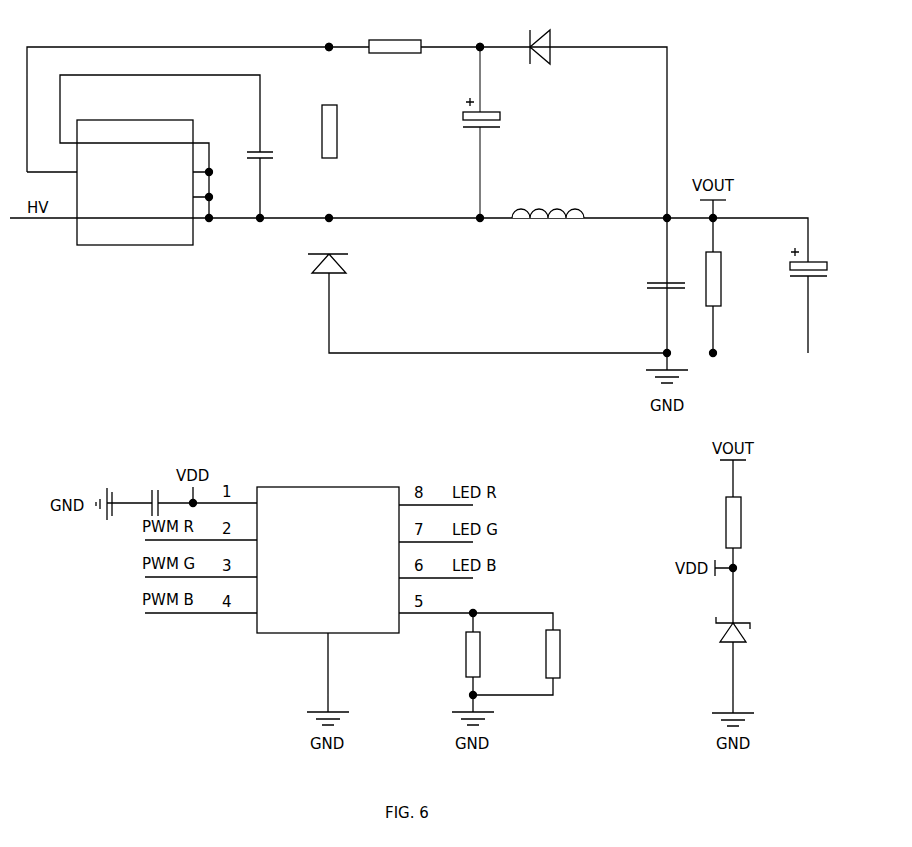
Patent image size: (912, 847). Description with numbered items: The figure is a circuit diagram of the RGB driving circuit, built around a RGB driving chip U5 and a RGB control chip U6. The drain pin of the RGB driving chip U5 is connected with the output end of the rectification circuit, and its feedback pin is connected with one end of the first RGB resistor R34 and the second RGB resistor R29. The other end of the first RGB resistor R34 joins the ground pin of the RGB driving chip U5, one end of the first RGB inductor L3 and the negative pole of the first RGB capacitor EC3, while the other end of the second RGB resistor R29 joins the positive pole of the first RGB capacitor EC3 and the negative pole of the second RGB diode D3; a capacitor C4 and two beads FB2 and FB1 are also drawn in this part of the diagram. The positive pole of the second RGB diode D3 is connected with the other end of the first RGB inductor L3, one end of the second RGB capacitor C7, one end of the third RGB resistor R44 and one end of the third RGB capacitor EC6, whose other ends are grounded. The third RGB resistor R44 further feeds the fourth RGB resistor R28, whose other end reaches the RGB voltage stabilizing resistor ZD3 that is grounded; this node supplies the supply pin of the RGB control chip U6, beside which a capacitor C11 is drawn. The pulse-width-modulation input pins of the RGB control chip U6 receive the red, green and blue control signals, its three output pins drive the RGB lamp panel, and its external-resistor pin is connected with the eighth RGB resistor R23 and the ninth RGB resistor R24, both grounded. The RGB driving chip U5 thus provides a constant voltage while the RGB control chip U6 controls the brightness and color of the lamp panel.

The RGB driving chip U5 is at (135, 172).
The capacitor C4 is at (264, 145).
The ferrite bead FB2 is at (321, 37).
The ferrite bead FB1 is at (475, 37).
The second RGB resistor R29 is at (364, 146).
The first RGB resistor R34 is at (347, 131).
The second RGB diode D3 is at (553, 44).
The first RGB capacitor EC3 is at (490, 110).
The first RGB inductor L3 is at (548, 203).
The second RGB capacitor C7 is at (659, 273).
The third RGB resistor R44 is at (731, 279).
The third RGB capacitor EC6 is at (817, 259).
The capacitor C11 is at (143, 491).
The RGB control chip U6 is at (328, 556).
The eighth RGB resistor R23 is at (489, 654).
The ninth RGB resistor R24 is at (569, 654).
The fourth RGB resistor R28 is at (751, 522).
The RGB voltage stabilizing resistor ZD3 is at (748, 622).